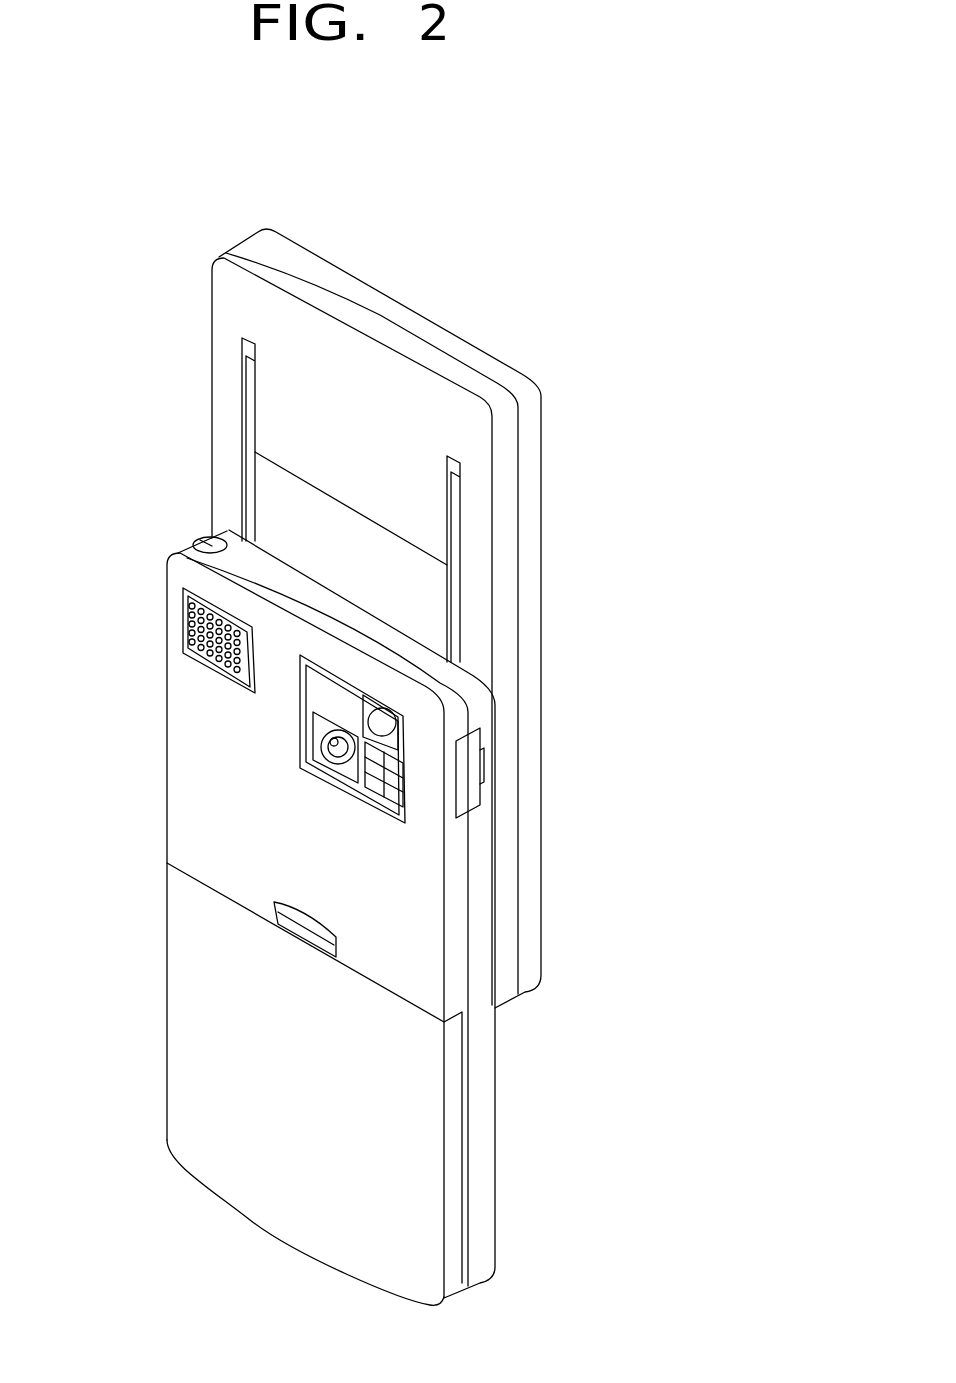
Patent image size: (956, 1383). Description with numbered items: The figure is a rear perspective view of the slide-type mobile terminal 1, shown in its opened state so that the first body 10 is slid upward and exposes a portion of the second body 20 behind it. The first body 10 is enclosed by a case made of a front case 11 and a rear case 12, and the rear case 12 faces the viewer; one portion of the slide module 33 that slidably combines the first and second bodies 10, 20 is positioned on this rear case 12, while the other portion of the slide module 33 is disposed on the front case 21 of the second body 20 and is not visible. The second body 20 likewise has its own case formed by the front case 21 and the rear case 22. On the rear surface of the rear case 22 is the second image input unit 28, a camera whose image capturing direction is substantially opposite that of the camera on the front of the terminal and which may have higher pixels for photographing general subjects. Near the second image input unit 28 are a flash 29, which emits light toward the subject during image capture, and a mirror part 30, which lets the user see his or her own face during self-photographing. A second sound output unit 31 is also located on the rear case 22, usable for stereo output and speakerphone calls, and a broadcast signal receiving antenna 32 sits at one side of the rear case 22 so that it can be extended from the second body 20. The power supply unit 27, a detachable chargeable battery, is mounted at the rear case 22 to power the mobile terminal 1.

The mobile terminal 1 is at (607, 363).
The first body 10 is at (175, 393).
The front case 11 is at (262, 240).
The rear case 12 is at (242, 256).
The second body 20 is at (137, 756).
The front case 21 is at (487, 1040).
The rear case 22 is at (457, 972).
The power supply unit 27 is at (187, 965).
The second image input unit 28 is at (338, 770).
The flash 29 is at (400, 803).
The mirror part 30 is at (385, 720).
The second sound output unit 31 is at (190, 633).
The broadcast signal receiving antenna 32 is at (206, 544).
The slide module 33 is at (452, 580).